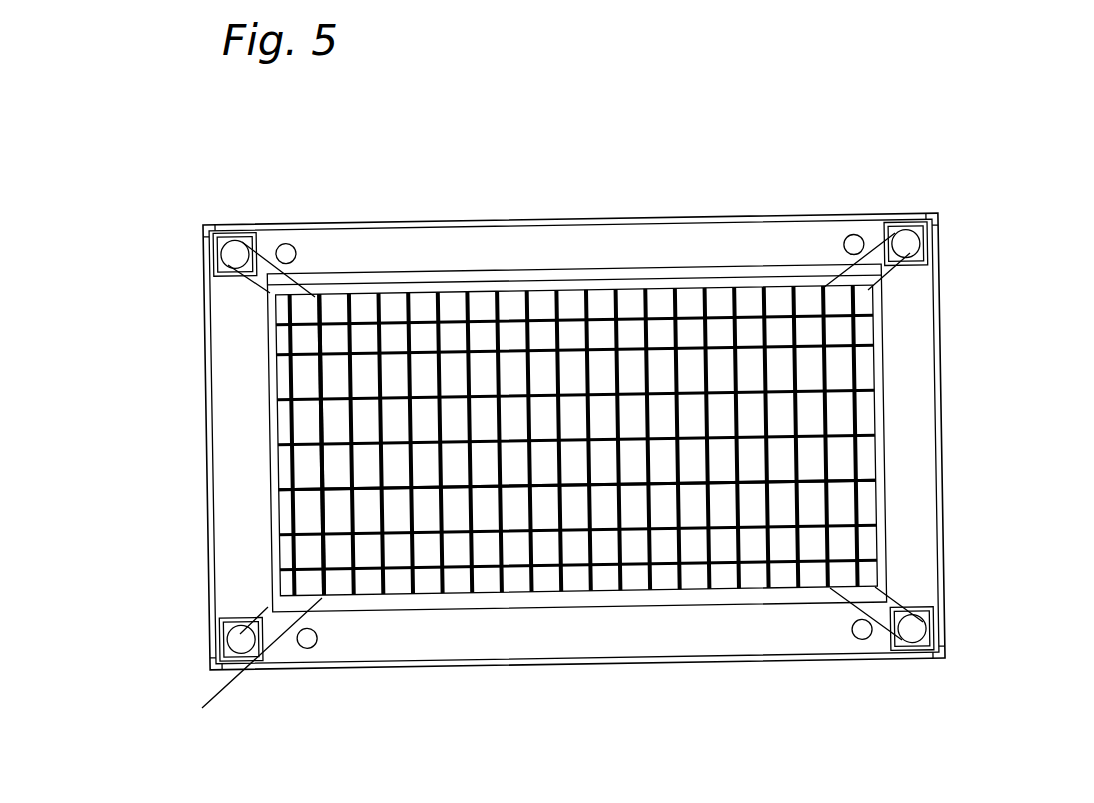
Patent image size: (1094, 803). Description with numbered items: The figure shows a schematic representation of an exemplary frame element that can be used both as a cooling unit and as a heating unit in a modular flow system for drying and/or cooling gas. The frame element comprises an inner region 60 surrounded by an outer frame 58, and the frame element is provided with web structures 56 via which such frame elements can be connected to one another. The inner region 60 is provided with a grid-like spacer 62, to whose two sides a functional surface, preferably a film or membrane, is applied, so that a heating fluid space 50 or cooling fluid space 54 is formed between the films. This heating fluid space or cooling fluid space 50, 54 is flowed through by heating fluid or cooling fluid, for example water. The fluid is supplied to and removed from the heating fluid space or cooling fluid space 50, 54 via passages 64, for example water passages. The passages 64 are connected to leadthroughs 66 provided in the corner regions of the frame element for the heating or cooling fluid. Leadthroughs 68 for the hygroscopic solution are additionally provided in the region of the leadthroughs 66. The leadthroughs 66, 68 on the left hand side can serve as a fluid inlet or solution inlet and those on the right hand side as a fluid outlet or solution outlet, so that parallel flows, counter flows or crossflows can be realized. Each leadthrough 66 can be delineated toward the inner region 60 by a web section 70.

The heating fluid space 50 is at (863, 417).
The cooling fluid space 54 is at (672, 438).
The web structure 56 is at (512, 227).
The outer frame 58 is at (623, 247).
The inner region 60 is at (310, 457).
The spacer 62 is at (323, 472).
The passage 64 is at (270, 288).
The leadthrough 66 is at (232, 253).
The leadthrough 68 is at (285, 253).
The web section 70 is at (230, 279).